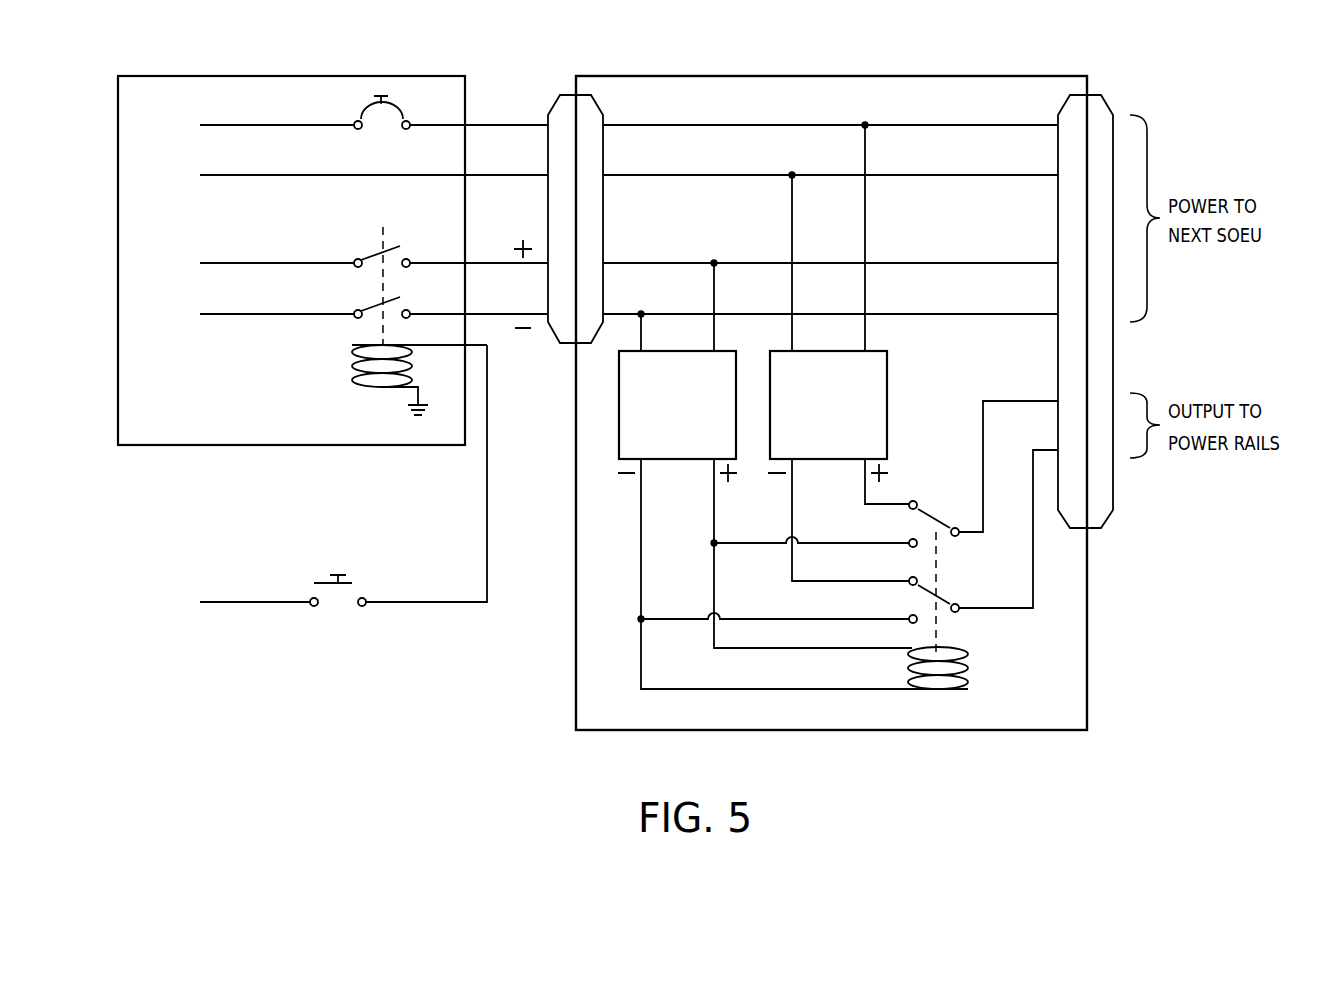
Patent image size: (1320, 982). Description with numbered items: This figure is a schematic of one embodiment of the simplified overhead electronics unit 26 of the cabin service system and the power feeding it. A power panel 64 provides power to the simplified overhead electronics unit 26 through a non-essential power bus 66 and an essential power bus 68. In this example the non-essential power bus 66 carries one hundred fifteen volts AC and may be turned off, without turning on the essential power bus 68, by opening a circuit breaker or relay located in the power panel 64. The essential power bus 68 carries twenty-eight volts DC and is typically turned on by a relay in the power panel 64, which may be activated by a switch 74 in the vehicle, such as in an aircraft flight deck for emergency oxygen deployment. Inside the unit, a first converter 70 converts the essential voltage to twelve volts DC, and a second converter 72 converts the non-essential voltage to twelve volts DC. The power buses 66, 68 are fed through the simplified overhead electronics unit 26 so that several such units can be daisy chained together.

The simplified overhead electronics unit 26 is at (848, 403).
The power panel 64 is at (307, 447).
The non-essential power bus 66 is at (443, 147).
The essential power bus 68 is at (443, 287).
The first converter 70 is at (677, 461).
The second converter 72 is at (828, 461).
The switch 74 is at (363, 588).